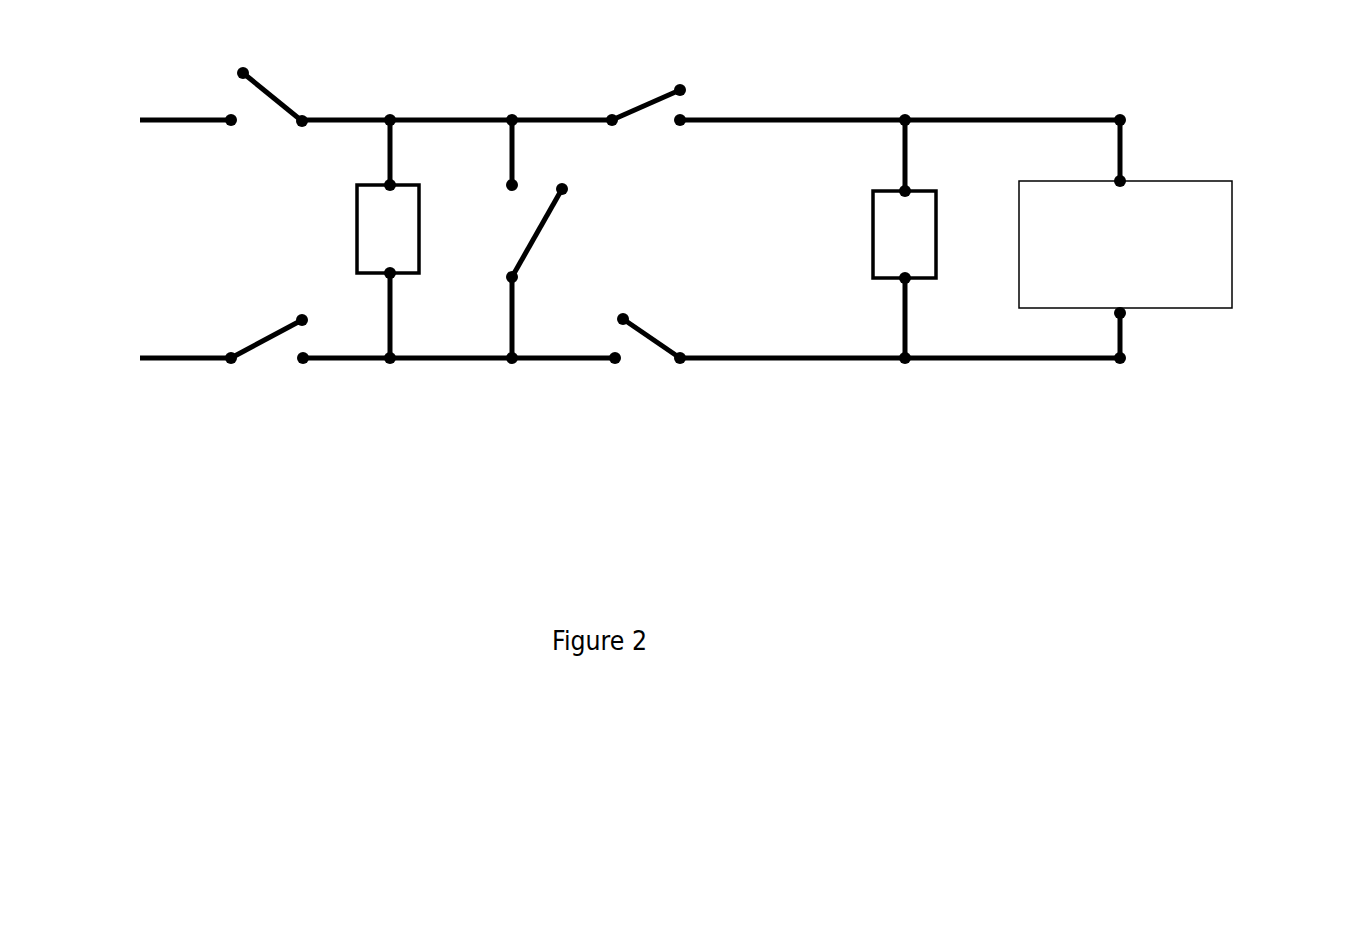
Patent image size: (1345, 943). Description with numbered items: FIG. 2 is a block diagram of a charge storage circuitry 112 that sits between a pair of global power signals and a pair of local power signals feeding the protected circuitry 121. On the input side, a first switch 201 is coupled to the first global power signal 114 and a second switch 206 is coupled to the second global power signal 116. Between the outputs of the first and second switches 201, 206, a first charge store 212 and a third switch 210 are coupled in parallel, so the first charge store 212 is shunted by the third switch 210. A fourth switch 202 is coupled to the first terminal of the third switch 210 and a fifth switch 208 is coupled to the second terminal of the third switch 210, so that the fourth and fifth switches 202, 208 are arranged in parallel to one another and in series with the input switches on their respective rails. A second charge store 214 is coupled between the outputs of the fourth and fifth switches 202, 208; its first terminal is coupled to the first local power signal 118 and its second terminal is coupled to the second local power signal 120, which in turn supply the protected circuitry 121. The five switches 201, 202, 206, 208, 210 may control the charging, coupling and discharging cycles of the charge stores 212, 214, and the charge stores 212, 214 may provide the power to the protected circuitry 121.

The surge protection circuit 112 is at (438, 475).
The first global power signal 114 is at (118, 126).
The second global power signal 116 is at (139, 376).
The first local power signal 118 is at (970, 108).
The second local power signal 120 is at (982, 375).
The protected circuitry 121 is at (1238, 283).
The first switch 201 is at (266, 101).
The fourth switch 202 is at (638, 106).
The second switch 206 is at (272, 376).
The fifth switch 208 is at (636, 372).
The third switch 210 is at (547, 248).
The first charge store 212 is at (342, 245).
The second charge store 214 is at (854, 258).